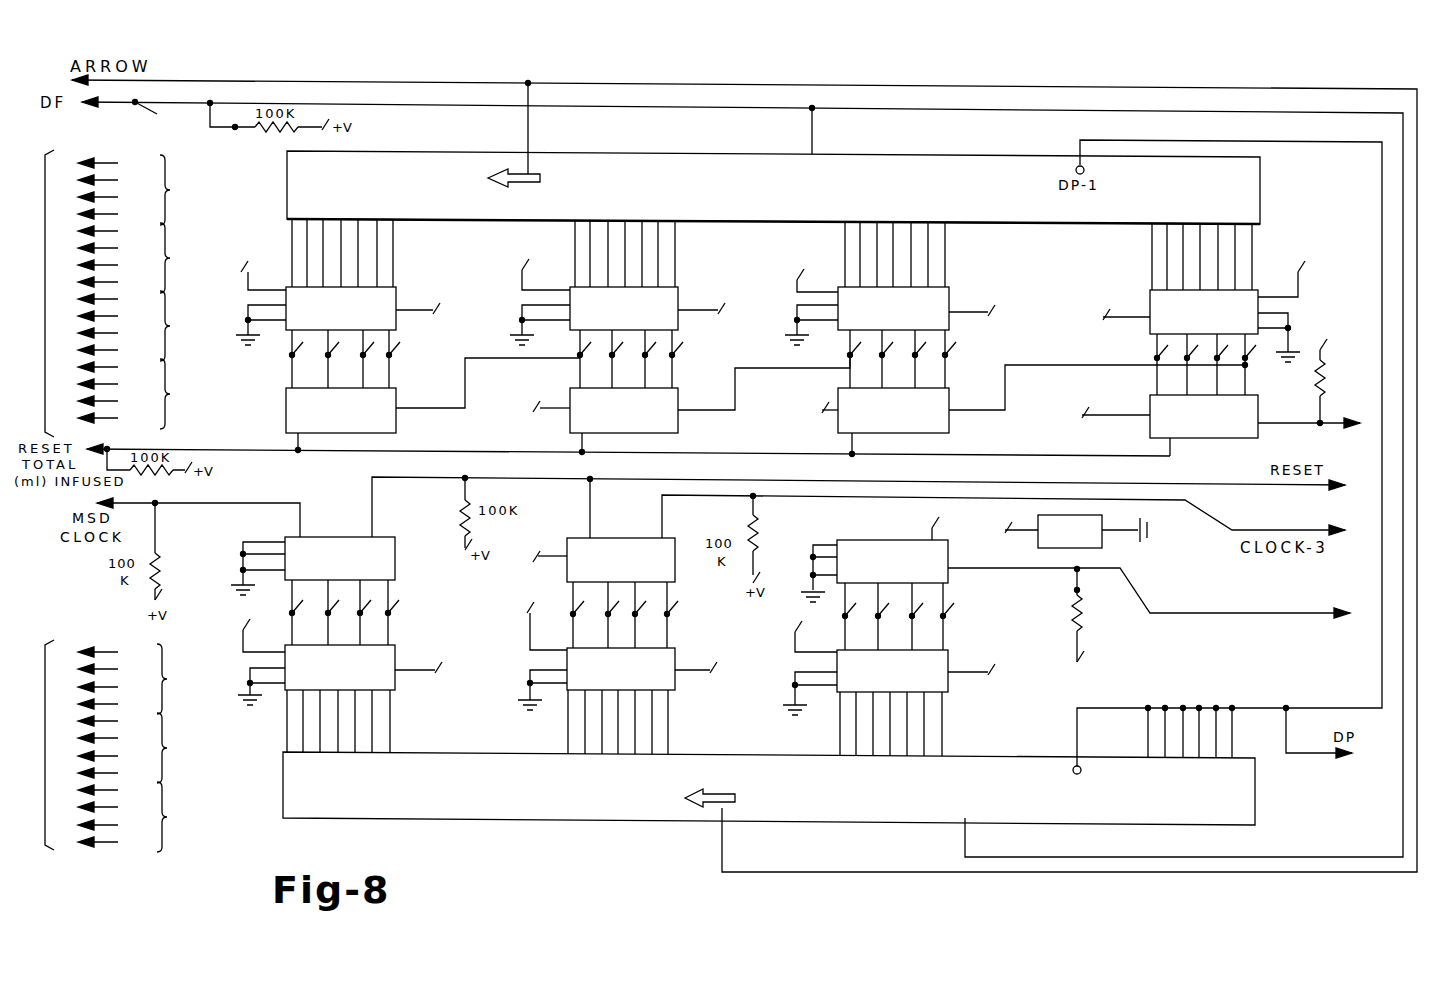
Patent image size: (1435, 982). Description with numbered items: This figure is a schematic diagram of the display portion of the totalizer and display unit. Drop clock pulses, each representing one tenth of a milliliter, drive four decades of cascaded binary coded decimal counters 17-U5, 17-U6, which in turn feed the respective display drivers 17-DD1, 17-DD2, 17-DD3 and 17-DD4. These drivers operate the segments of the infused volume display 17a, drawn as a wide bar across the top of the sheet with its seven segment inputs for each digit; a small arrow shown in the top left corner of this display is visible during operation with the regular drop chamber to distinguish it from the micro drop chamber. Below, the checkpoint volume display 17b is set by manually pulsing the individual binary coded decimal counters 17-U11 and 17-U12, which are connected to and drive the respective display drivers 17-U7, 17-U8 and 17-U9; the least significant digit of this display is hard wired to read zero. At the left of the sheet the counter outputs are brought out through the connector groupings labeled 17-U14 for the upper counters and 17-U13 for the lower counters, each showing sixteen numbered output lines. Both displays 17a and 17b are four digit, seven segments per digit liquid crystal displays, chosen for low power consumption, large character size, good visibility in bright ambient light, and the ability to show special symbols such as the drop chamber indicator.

The infused volume display 17a is at (652, 152).
The checkpoint volume display 17b is at (705, 758).
The display driver 17-DD1 is at (396, 296).
The display driver 17-DD2 is at (678, 296).
The display driver 17-DD3 is at (949, 297).
The display driver 17-DD4 is at (1256, 292).
The cascaded binary coded decimal counter 17-U5 is at (565, 418).
The cascaded binary coded decimal counter 17-U6 is at (1150, 424).
The display driver 17-U7 is at (395, 657).
The display driver 17-U8 is at (675, 656).
The display driver 17-U9 is at (948, 655).
The binary coded decimal counter 17-U11 is at (567, 565).
The binary coded decimal counter 17-U12 is at (1035, 520).
The connector 17-U13 is at (45, 848).
The connector 17-U14 is at (42, 283).